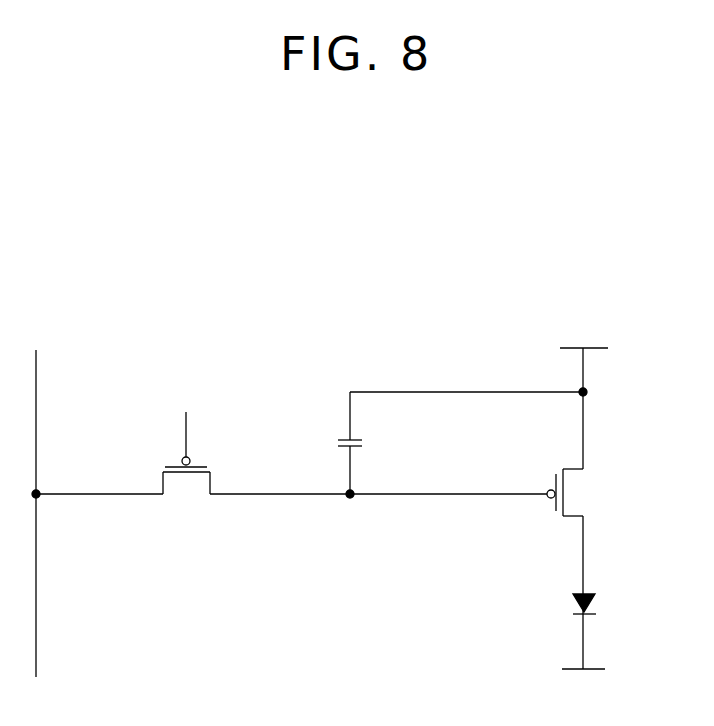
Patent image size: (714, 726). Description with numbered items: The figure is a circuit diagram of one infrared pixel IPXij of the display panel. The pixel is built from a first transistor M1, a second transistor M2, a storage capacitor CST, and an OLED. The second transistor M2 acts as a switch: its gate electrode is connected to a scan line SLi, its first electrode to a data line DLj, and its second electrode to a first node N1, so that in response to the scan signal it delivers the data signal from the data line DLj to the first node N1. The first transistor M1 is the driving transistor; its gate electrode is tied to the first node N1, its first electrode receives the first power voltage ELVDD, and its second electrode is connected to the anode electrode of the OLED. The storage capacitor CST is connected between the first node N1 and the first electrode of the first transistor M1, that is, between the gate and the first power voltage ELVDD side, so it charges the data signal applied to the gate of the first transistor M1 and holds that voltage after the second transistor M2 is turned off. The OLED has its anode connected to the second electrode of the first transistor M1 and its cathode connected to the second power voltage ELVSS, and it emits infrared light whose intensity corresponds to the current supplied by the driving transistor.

The infrared pixel IPXij is at (390, 297).
The data line DLj is at (31, 500).
The scan line SLi is at (181, 423).
The second transistor M2 is at (186, 482).
The first node N1 is at (442, 508).
The storage capacitor CST is at (460, 443).
The first power voltage ELVDD is at (581, 397).
The first transistor M1 is at (574, 492).
The element OLED is at (612, 605).
The second power voltage ELVSS is at (582, 685).